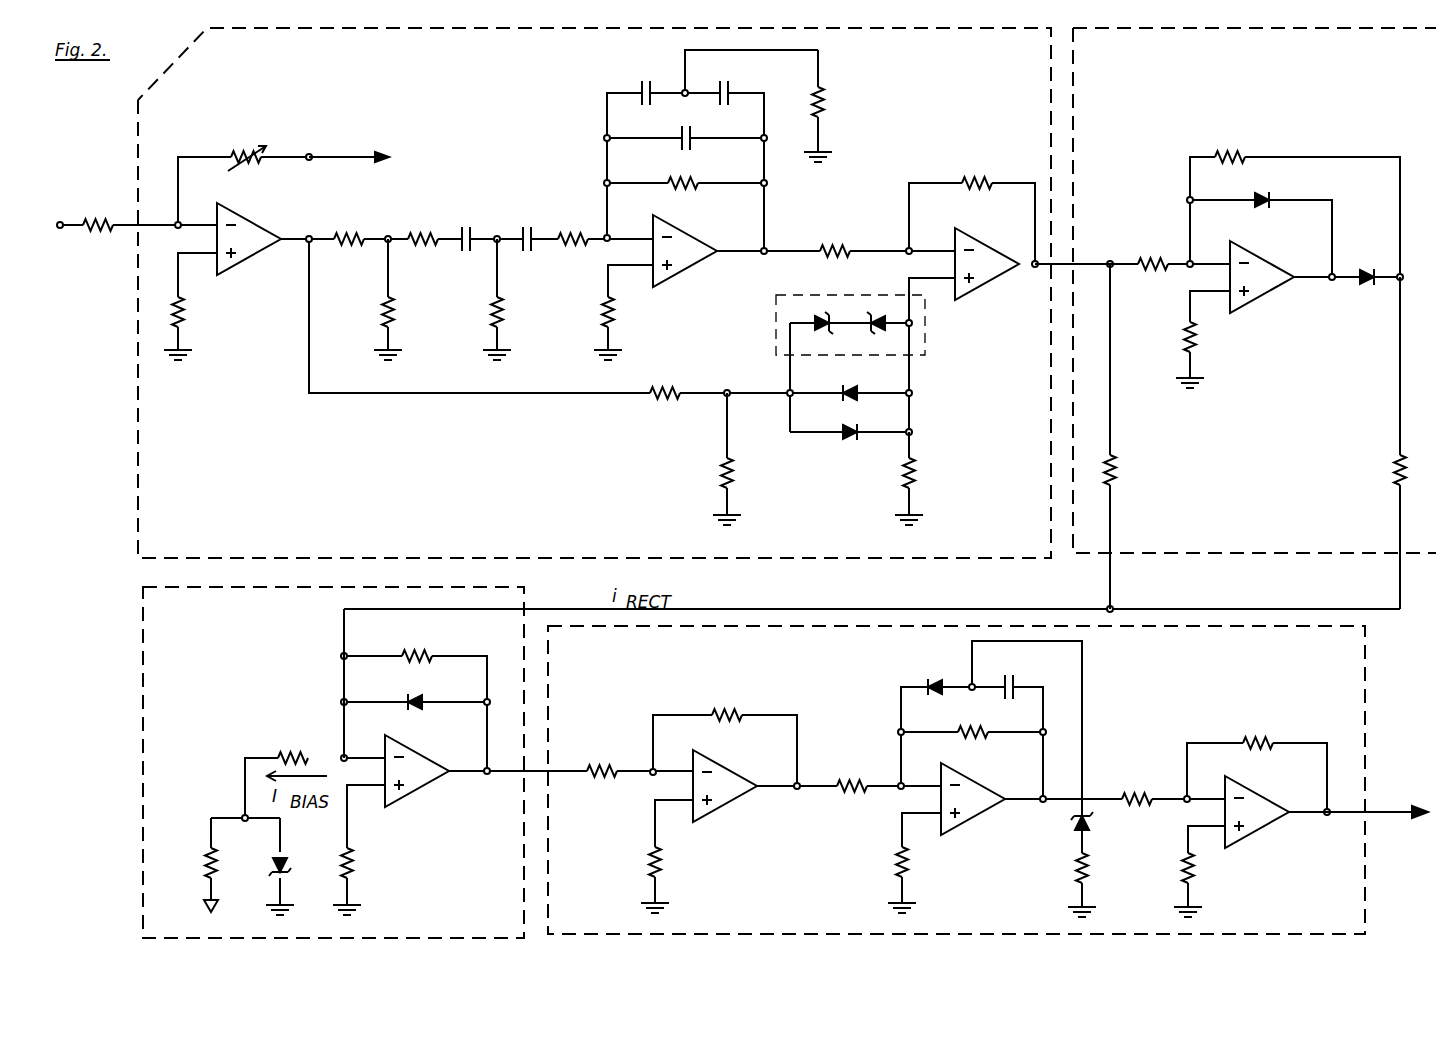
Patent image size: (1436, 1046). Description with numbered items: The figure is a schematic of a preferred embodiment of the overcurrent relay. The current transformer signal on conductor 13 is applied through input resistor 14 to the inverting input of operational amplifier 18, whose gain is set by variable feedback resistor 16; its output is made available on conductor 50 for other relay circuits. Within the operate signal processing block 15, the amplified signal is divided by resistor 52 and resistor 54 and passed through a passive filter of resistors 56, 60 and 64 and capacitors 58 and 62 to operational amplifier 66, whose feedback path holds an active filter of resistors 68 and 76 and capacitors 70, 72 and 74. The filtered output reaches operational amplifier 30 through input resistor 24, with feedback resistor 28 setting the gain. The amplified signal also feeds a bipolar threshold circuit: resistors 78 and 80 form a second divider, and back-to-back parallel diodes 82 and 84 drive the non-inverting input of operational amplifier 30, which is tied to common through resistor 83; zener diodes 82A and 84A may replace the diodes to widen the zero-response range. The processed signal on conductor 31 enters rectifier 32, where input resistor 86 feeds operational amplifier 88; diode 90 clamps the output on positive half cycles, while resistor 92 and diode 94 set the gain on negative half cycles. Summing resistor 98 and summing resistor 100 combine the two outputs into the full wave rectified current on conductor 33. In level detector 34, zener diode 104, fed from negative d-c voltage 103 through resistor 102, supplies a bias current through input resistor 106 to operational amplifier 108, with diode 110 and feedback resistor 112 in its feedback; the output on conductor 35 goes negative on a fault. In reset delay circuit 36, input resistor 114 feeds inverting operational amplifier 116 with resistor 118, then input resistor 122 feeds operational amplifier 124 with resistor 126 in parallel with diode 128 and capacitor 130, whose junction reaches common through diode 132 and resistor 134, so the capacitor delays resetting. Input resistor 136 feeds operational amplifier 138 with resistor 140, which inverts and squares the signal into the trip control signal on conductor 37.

The conductor 13 is at (72, 222).
The input resistor 14 is at (100, 232).
The operate signal processing circuit 15 is at (400, 540).
The variable feedback resistor 16 is at (234, 151).
The operational amplifier 18 is at (253, 258).
The input resistor 24 is at (836, 243).
The feedback resistor 28 is at (979, 176).
The operational amplifier 30 is at (991, 286).
The conductor 31 is at (1091, 259).
The rectifier 32 is at (1238, 494).
The rectifier output 33 is at (391, 610).
The level detector 34 is at (435, 919).
The conductor 35 is at (567, 775).
The reset delay circuit 36 is at (765, 914).
The conductor 37 is at (1386, 810).
The conductor 50 is at (343, 155).
The resistor 52 is at (346, 233).
The resistor 54 is at (400, 311).
The resistor 56 is at (421, 231).
The capacitor 58 is at (465, 225).
The resistor 60 is at (508, 311).
The capacitor 62 is at (527, 225).
The resistor 64 is at (576, 231).
The operational amplifier 66 is at (690, 270).
The resistor 68 is at (708, 187).
The capacitor 70 is at (695, 143).
The capacitor 72 is at (638, 88).
The capacitor 74 is at (736, 88).
The resistor 76 is at (829, 101).
The resistor 78 is at (681, 386).
The resistor 80 is at (720, 474).
The diode 82 is at (852, 441).
The zener diode 82A is at (818, 314).
The resistor 83 is at (921, 471).
The diode 84 is at (849, 389).
The zener diode 84A is at (880, 314).
The input resistor 86 is at (1153, 252).
The operational amplifier 88 is at (1276, 306).
The diode 90 is at (1266, 211).
The resistor 92 is at (1216, 149).
The diode 94 is at (1373, 264).
The summing resistor 98 is at (1121, 483).
The summing resistor 100 is at (1392, 481).
The resistor 102 is at (205, 856).
The negative d-c voltage 103 is at (218, 911).
The zener diode 104 is at (291, 860).
The input resistor 106 is at (280, 749).
The operational amplifier 108 is at (431, 783).
The diode 110 is at (421, 709).
The feedback resistor 112 is at (429, 649).
The input resistor 114 is at (603, 760).
The inverting operational amplifier 116 is at (736, 796).
The resistor 118 is at (743, 726).
The input resistor 122 is at (854, 776).
The operational amplifier 124 is at (975, 816).
The resistor 126 is at (986, 741).
The diode 128 is at (935, 680).
The capacitor 130 is at (1019, 679).
The diode 132 is at (1091, 823).
The resistor 134 is at (1093, 876).
The input resistor 136 is at (1138, 789).
The operational amplifier 138 is at (1263, 831).
The resistor 140 is at (1261, 749).